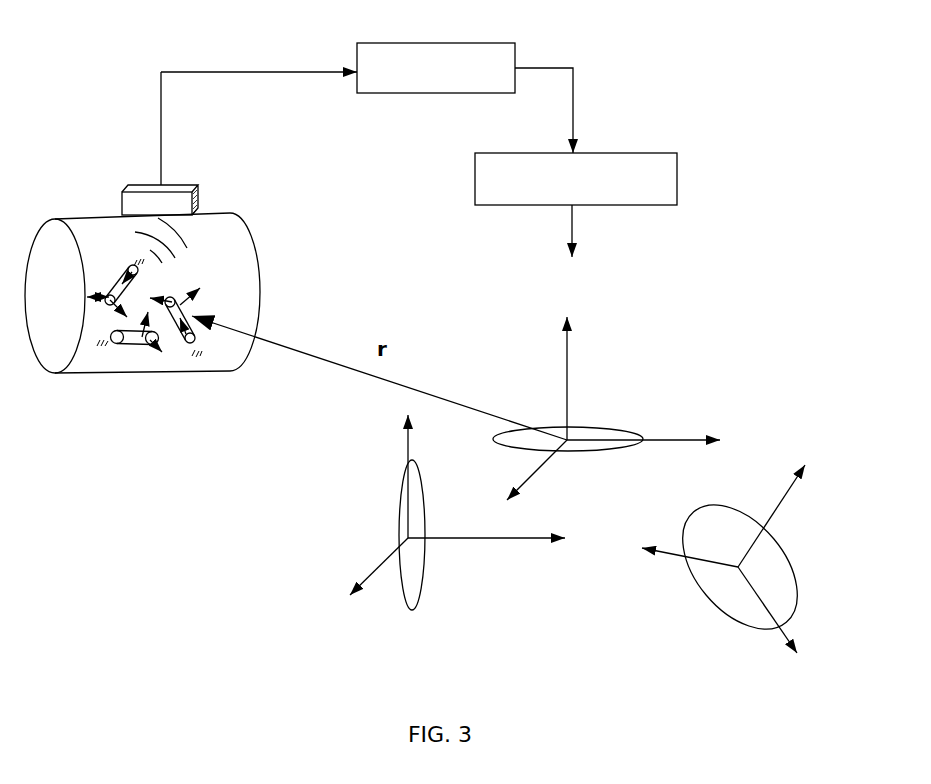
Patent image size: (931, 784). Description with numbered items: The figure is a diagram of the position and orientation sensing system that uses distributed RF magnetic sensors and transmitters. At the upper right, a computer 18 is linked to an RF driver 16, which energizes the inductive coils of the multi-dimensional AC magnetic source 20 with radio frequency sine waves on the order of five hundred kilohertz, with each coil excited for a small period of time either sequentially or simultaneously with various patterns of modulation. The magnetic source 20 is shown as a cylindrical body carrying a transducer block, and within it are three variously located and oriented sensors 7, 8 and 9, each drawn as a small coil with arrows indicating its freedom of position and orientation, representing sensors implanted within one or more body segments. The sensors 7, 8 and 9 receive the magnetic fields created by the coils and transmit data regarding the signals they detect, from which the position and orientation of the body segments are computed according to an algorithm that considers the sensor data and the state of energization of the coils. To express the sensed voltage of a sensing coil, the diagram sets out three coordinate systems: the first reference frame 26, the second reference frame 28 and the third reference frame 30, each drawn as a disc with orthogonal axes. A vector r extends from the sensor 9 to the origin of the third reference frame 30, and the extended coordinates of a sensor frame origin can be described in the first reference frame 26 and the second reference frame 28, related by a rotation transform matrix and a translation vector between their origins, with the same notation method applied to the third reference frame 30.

The sensor 7 is at (110, 300).
The sensor 8 is at (120, 338).
The sensor 9 is at (183, 340).
The RF driver 16 is at (627, 148).
The computer 18 is at (505, 45).
The multi-dimensional AC magnetic source 20 is at (228, 213).
The reference frame 1 26 is at (398, 560).
The reference frame 2 28 is at (700, 593).
The reference frame 3 30 is at (603, 427).